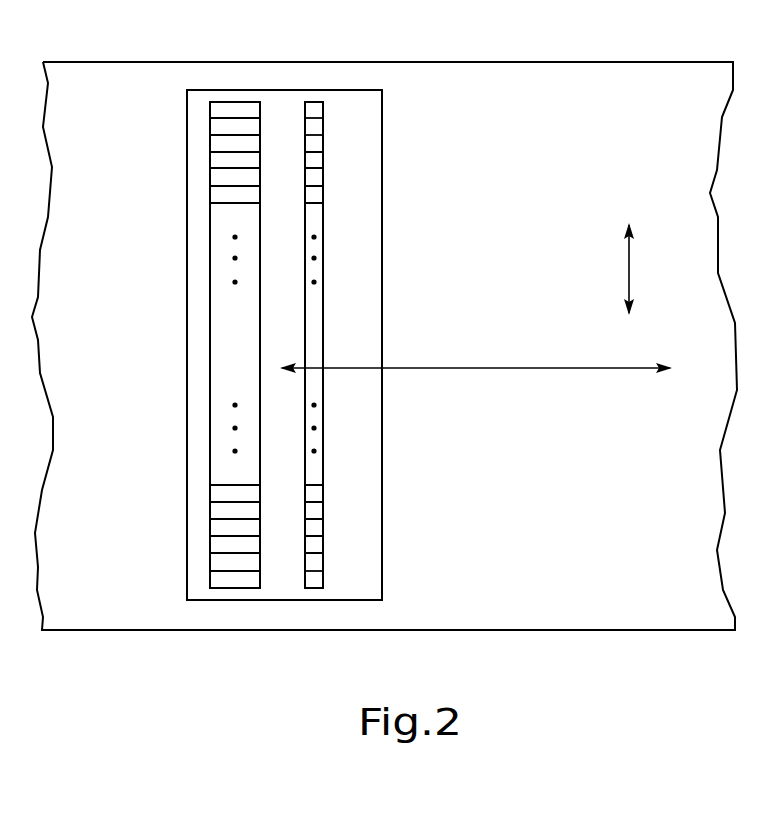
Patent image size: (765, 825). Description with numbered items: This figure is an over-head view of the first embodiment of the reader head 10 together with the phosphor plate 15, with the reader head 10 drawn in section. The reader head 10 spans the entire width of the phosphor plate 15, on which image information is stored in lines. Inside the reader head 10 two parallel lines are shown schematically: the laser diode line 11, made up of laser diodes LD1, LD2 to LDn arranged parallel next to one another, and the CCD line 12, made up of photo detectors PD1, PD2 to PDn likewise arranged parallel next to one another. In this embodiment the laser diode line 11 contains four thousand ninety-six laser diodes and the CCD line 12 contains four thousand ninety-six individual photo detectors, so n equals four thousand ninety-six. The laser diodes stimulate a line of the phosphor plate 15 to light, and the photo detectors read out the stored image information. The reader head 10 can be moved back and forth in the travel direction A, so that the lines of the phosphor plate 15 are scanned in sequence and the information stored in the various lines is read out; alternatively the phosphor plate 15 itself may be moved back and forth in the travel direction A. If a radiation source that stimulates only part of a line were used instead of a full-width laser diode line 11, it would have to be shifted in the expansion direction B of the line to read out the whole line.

The phosphor plate 15 is at (503, 75).
The reader head 10 is at (390, 251).
The laser diode line 11 is at (188, 339).
The CCD line 12 is at (381, 346).
The laser diode LD1 is at (214, 110).
The laser diode LD2 is at (214, 128).
The laser diode LDn is at (215, 580).
The photo detector PD1 is at (316, 108).
The photo detector PD2 is at (316, 130).
The photo detector PDn is at (318, 581).
The travel direction A is at (476, 383).
The expansion direction B is at (638, 269).